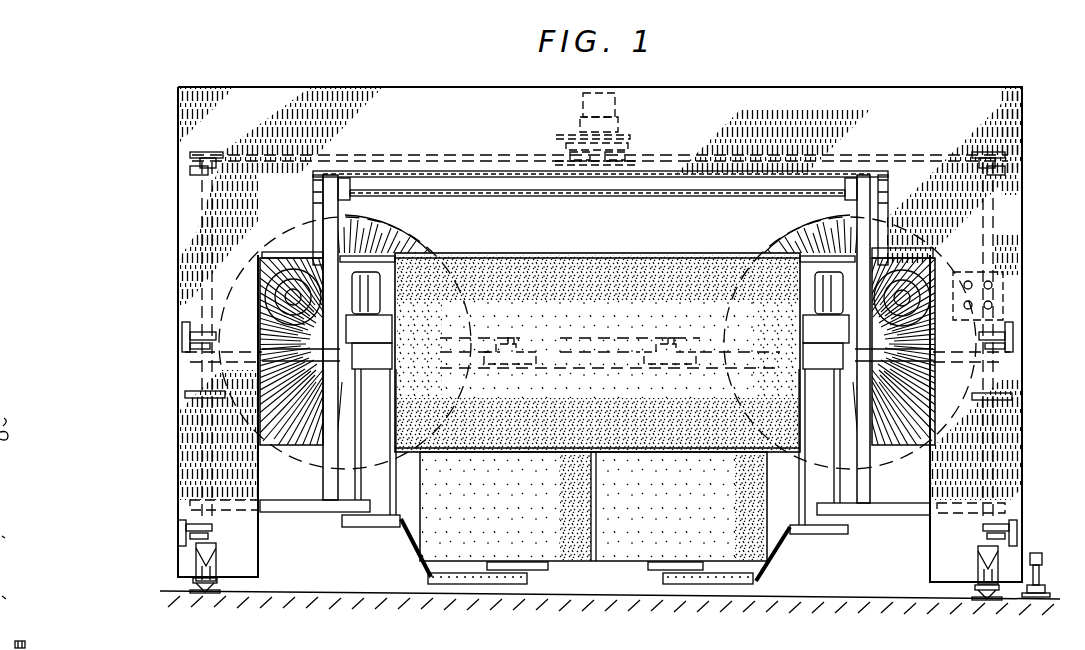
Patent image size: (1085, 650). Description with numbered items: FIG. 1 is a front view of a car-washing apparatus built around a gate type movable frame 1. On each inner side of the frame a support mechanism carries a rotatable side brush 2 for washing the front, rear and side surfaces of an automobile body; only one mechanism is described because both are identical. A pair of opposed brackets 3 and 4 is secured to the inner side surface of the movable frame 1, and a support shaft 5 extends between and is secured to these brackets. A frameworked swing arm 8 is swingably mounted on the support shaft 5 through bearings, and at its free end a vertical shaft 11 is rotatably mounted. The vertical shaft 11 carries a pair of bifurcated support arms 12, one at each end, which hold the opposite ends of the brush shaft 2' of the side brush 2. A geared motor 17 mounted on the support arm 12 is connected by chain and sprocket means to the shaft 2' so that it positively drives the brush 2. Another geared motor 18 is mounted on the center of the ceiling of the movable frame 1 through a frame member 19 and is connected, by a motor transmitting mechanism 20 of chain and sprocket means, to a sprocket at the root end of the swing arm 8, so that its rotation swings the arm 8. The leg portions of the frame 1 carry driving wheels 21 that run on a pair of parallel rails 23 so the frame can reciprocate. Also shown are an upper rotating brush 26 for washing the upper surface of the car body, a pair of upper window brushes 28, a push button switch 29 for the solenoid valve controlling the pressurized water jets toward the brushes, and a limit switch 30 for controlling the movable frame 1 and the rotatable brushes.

The gate type movable frame 1 is at (1024, 100).
The rotatable side brush 2 is at (590, 577).
The shaft of the rotatable side brush 2' is at (590, 344).
The bracket 3 is at (1010, 350).
The bracket 4 is at (1013, 536).
The support shaft 5 is at (978, 414).
The swing arm 8 is at (872, 527).
The vertical shaft 11 is at (822, 534).
The bifurcated support arm 12 is at (794, 542).
The geared motor 17 is at (748, 258).
The geared motor 18 is at (613, 108).
The frame member 19 is at (625, 134).
The motor transmitting mechanism 20 is at (882, 158).
The driving wheel 21 is at (974, 568).
The rail 23 is at (982, 606).
The upper rotating brush 26 is at (579, 257).
The upper window brush 28 is at (787, 226).
The push button switch 29 is at (1004, 293).
The limit switch 30 is at (1040, 580).